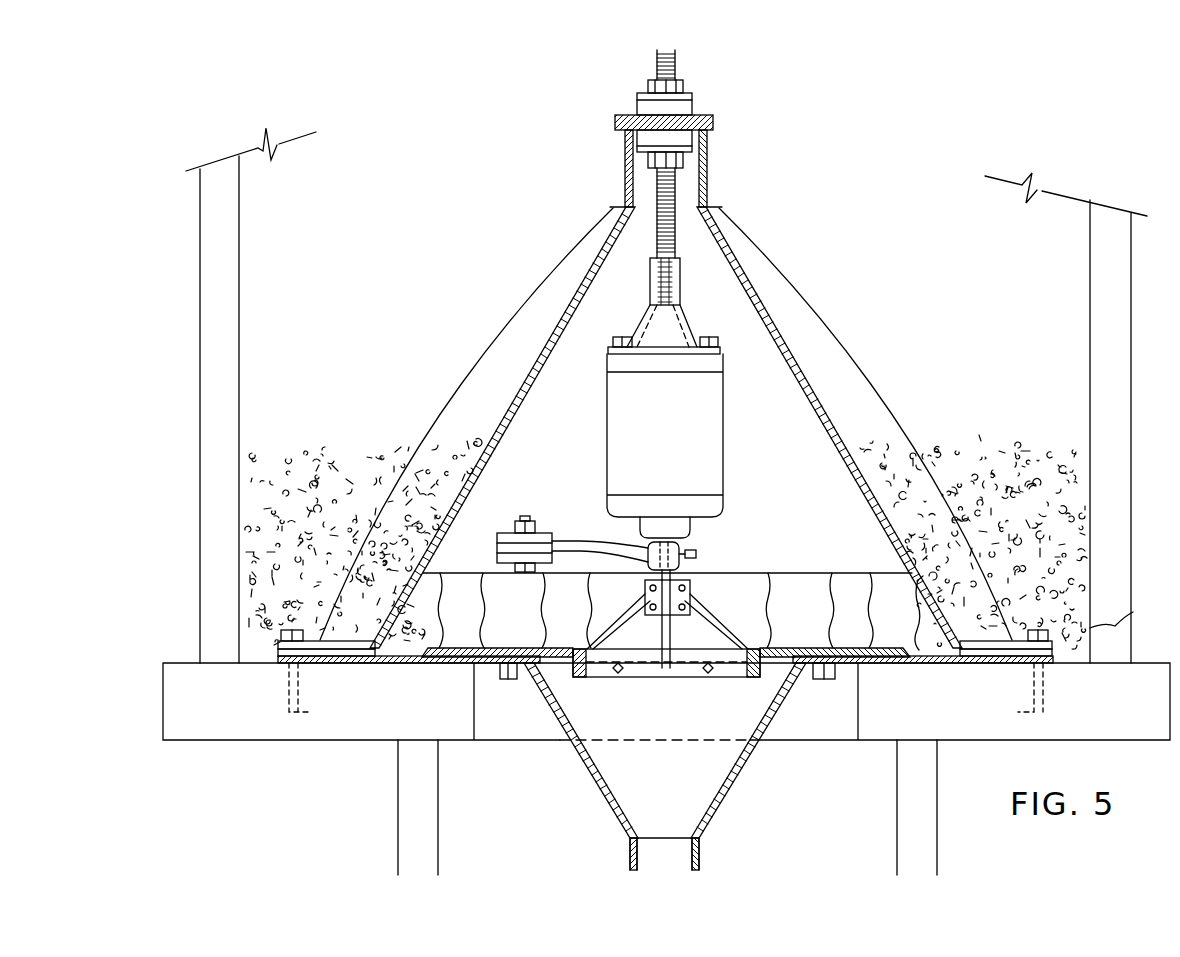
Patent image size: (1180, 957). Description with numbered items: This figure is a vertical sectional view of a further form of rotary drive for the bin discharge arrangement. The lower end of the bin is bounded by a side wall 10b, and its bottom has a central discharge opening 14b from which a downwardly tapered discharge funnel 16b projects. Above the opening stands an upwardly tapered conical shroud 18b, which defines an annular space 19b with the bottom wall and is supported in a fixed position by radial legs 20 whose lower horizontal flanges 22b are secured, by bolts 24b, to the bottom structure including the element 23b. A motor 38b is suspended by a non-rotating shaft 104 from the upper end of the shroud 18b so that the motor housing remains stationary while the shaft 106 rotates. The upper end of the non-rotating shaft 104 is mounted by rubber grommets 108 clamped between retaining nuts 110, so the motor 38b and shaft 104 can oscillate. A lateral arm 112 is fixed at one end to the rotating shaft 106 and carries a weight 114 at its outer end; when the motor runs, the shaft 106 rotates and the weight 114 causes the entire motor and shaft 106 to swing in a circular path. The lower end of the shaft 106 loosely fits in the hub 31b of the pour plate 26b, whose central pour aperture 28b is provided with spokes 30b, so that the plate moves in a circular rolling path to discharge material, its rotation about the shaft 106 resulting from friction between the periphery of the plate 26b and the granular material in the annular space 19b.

The bin walls 10b is at (198, 361).
The discharge hopper 14b is at (690, 807).
The discharge outlet 16b is at (624, 782).
The shroud 18b is at (729, 244).
The annular space 19b is at (403, 604).
The radial legs 20 is at (770, 264).
The hopper flange 22b is at (277, 643).
The base plate 23b is at (277, 652).
The mounting flange 24b is at (283, 629).
The pour plate 26b is at (830, 646).
The discharge tube 28b is at (686, 632).
The flexible boot 30b is at (736, 627).
The hub 31b is at (647, 620).
The motor 38b is at (701, 405).
The non-rotating shaft 104 is at (680, 193).
The rotating shaft 106 is at (676, 575).
The rubber grommets 108 is at (692, 140).
The retaining nuts 110 is at (647, 86).
The lateral arm 112 is at (581, 541).
The weight 114 is at (516, 528).